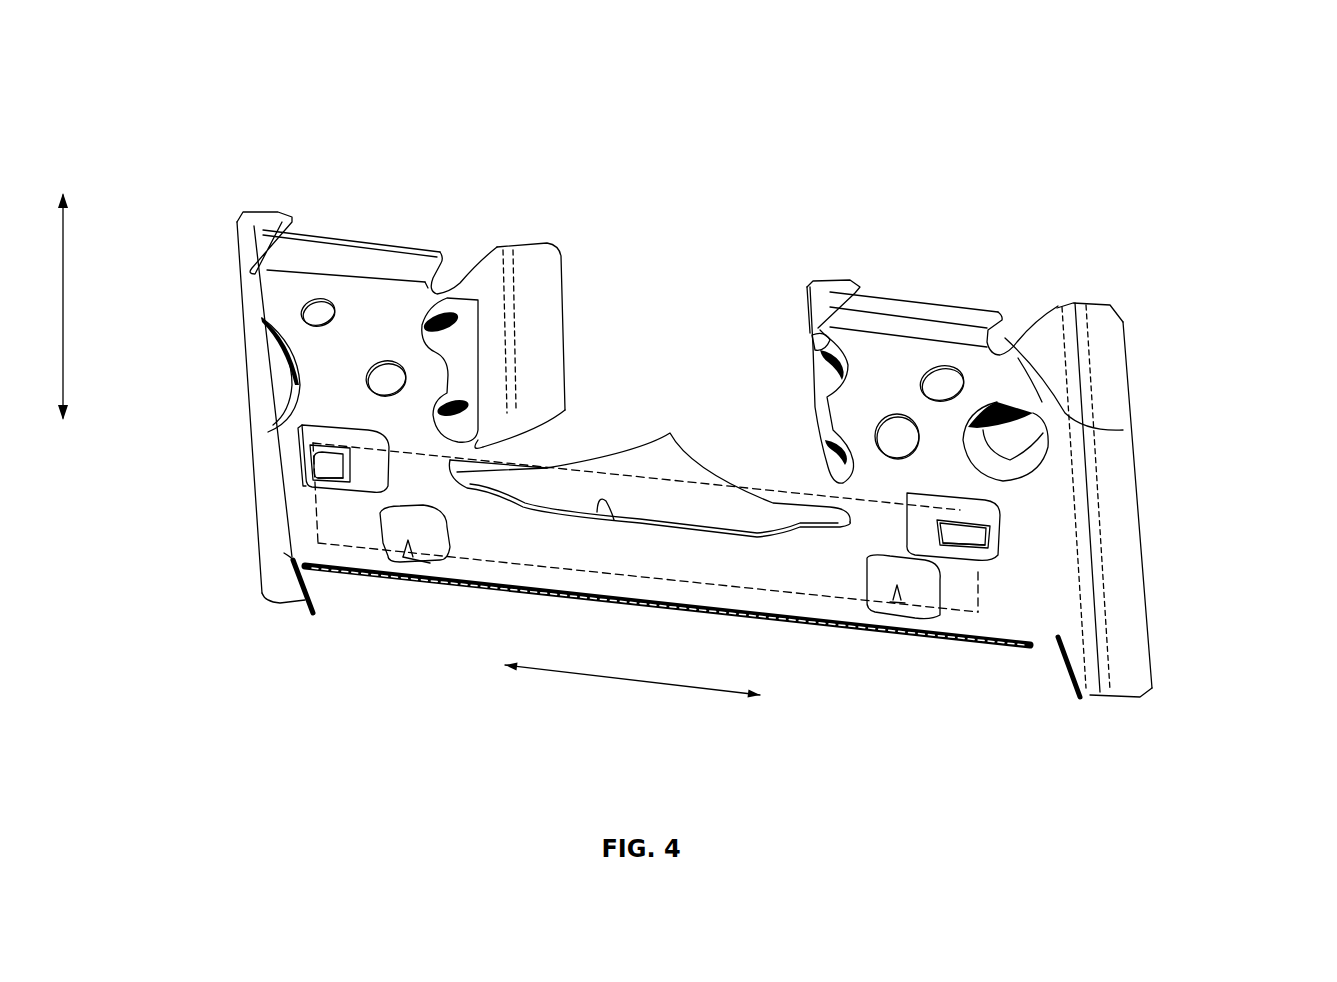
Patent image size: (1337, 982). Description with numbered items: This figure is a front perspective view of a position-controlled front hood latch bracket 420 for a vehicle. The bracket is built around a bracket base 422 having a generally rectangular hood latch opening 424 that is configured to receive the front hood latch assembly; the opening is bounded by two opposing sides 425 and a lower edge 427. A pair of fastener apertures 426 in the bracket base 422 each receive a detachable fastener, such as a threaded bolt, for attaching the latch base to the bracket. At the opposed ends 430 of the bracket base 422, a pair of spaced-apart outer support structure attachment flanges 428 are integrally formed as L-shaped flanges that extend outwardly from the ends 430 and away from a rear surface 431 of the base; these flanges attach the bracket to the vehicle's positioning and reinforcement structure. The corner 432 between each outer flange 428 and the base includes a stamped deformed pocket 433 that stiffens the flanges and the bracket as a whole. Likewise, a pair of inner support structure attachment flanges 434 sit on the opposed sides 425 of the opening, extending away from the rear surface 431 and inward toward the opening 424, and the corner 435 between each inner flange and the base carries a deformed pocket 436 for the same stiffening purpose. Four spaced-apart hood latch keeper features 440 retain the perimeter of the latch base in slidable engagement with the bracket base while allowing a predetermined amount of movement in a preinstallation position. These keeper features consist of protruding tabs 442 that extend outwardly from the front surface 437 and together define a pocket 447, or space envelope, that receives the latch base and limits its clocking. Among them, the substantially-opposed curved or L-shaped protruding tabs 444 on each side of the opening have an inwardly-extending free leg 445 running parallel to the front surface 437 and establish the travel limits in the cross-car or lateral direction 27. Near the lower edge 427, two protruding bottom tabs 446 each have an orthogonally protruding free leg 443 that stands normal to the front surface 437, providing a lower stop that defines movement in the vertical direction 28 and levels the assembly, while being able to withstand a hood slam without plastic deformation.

The front hood latch bracket 420 is at (892, 185).
The bracket base 422 is at (883, 350).
The hood latch opening 424 is at (633, 320).
The opposing sides 425 is at (670, 433).
The fastener apertures 426 is at (383, 375).
The lower edge 427 is at (614, 520).
The outer support structure attachment flanges 428 is at (258, 226).
The opposed ends 430 is at (243, 320).
The rear surface 431 is at (1068, 415).
The corner 432 is at (1043, 603).
The deformed pocket 433 is at (1012, 438).
The inner support structure attachment flanges 434 is at (545, 360).
The corner 435 is at (487, 447).
The deformed pocket 436 is at (458, 407).
The front surface 437 is at (353, 300).
The hood latch keeper features 440 is at (302, 437).
The protruding tabs 442 is at (305, 447).
The orthogonally protruding free leg 443 is at (895, 600).
The substantially-opposed protruding tabs 444 is at (650, 498).
The inwardly-extending free leg 445 is at (330, 467).
The protruding bottom tab 446 is at (408, 543).
The pocket 447 is at (800, 598).
The cross-car or lateral direction 27 is at (605, 680).
The vertical direction 28 is at (69, 317).